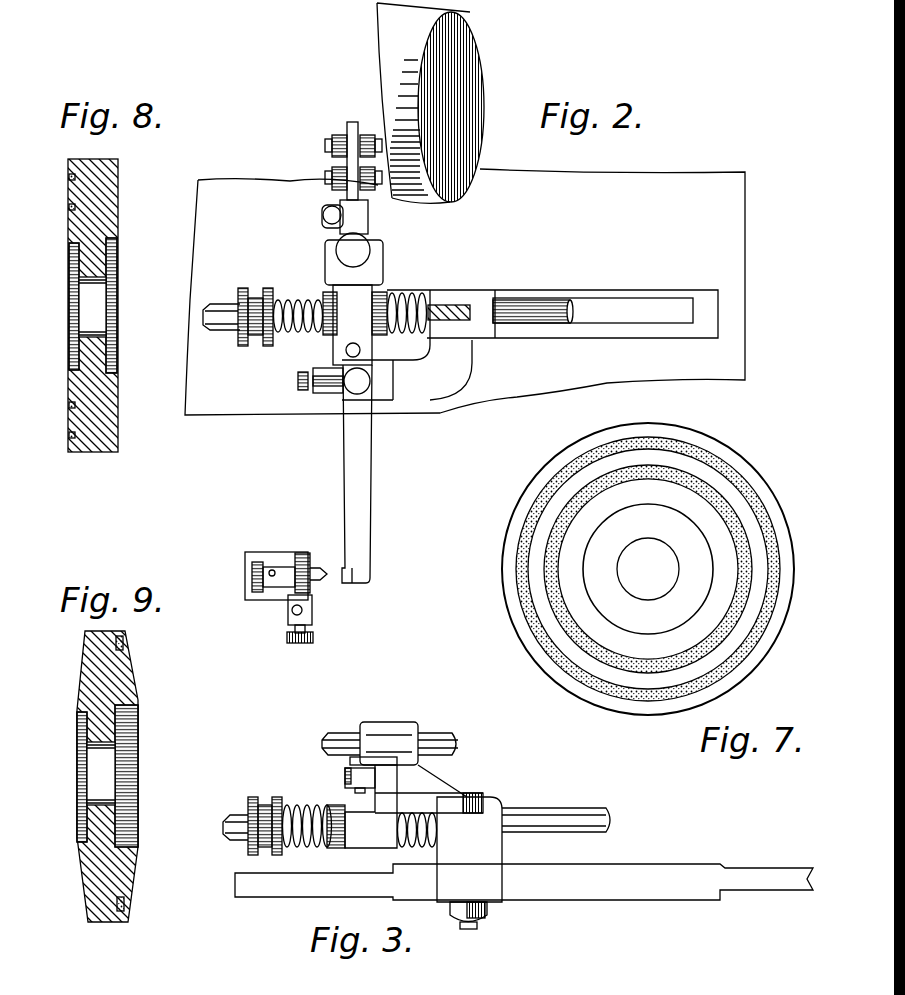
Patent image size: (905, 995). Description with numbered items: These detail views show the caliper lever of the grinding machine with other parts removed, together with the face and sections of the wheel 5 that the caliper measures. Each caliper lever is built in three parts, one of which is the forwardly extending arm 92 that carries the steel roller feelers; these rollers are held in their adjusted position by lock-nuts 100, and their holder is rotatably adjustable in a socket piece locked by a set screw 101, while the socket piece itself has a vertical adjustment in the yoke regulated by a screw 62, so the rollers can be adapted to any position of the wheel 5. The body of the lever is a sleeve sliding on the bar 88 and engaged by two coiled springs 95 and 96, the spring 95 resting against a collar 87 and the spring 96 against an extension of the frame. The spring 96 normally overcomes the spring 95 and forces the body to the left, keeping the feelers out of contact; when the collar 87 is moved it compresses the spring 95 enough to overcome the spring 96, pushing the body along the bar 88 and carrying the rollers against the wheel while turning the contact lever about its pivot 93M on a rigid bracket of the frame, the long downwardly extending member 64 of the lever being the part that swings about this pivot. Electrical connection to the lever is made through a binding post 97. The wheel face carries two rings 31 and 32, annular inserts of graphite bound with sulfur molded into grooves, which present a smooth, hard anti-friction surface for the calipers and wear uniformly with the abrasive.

In FIG. 2, the wheel 5 is at (470, 150).
In FIG. 2, the forwardly extending arm 92 is at (347, 165).
In FIG. 2, the lock-nuts 100 is at (366, 137).
In FIG. 2, the set screw 101 is at (333, 225).
In FIG. 2, the screw 62 is at (370, 252).
In FIG. 2, the collar 87 is at (255, 295).
In FIG. 3, the collar 87 is at (270, 797).
In FIG. 2, the bar 88 is at (573, 310).
In FIG. 3, the bar 88 is at (233, 815).
In FIG. 2, the coiled spring 95 is at (310, 332).
In FIG. 2, the coiled spring 96 is at (415, 292).
In FIG. 2, the binding post 97 is at (325, 393).
In FIG. 2, the pivot 93M is at (357, 395).
In FIG. 2, the arm 64 is at (365, 508).
In FIG. 7, the ring insert 31 is at (726, 492).
In FIG. 8, the ring insert 31 is at (69, 405).
In FIG. 7, the ring insert 32 is at (694, 447).
In FIG. 8, the ring insert 32 is at (69, 435).